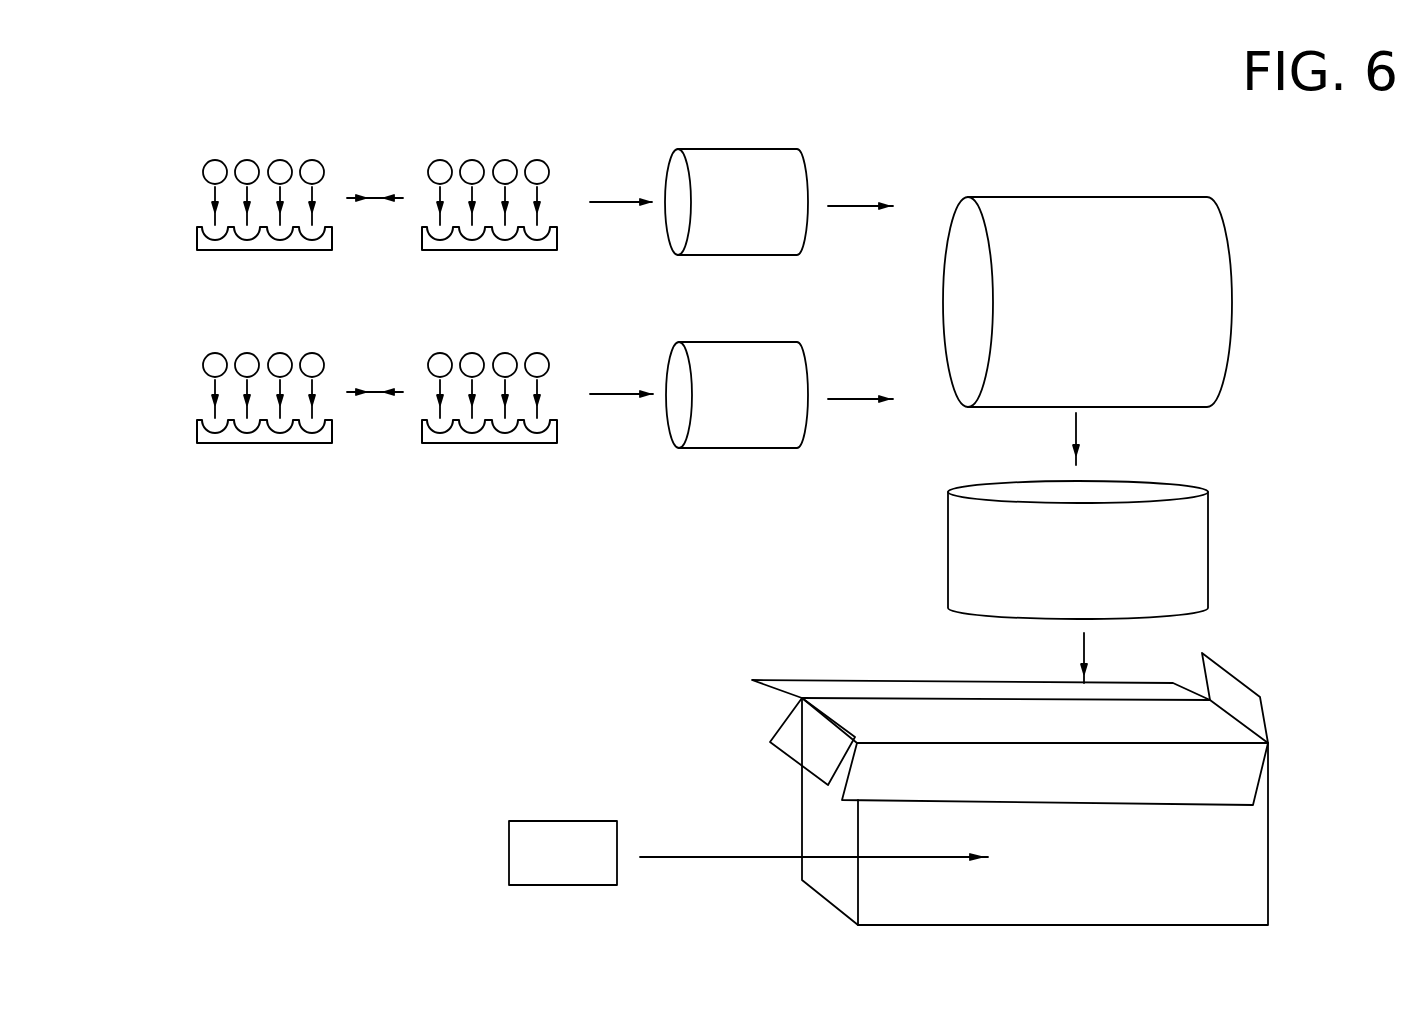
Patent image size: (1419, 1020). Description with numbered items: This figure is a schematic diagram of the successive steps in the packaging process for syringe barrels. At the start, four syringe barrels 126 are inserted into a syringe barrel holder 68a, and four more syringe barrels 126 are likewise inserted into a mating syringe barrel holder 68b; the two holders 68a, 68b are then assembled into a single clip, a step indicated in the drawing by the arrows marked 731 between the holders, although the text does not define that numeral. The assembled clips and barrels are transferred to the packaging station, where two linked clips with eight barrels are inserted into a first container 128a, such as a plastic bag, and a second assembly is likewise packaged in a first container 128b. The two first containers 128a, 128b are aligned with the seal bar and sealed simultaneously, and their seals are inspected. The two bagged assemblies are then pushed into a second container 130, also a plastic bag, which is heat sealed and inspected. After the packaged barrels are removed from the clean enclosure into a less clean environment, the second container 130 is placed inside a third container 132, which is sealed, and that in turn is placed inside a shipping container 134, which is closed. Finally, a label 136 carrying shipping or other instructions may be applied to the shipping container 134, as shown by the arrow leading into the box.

The syringe barrels 126 is at (302, 152).
The syringe barrel holder 68a is at (264, 332).
The mating syringe barrel holder 68b is at (489, 332).
The transfer step 731 is at (375, 348).
The first container 128a is at (728, 152).
The first container 128b is at (713, 448).
The second container 130 is at (1087, 197).
The third container 132 is at (947, 557).
The shipping container 134 is at (902, 680).
The label 136 is at (578, 820).